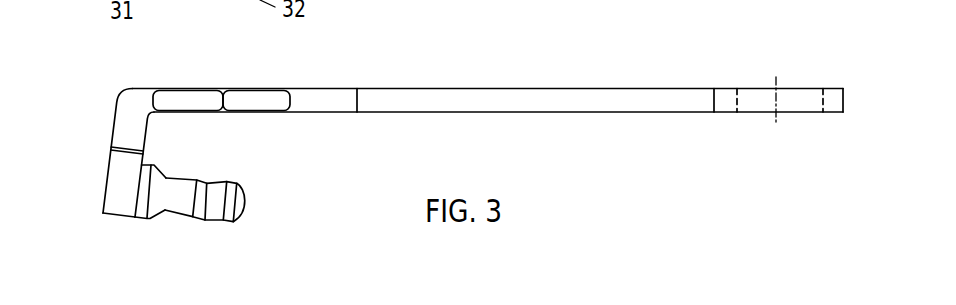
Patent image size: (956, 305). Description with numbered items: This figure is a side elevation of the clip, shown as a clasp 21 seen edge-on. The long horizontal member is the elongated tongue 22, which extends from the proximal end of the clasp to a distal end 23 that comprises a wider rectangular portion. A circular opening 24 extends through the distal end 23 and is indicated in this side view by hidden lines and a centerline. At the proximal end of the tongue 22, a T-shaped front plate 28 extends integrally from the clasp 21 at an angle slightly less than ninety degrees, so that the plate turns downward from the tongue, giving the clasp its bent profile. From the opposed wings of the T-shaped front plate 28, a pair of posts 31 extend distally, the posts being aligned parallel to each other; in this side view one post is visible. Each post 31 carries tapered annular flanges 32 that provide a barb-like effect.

The clasp 21 is at (518, 68).
The elongated tongue 22 is at (552, 113).
The distal end 23 is at (723, 102).
The circular opening 24 is at (798, 102).
The T-shaped front plate 28 is at (109, 164).
The posts 31 is at (170, 217).
The tapered annular flanges 32 is at (196, 218).